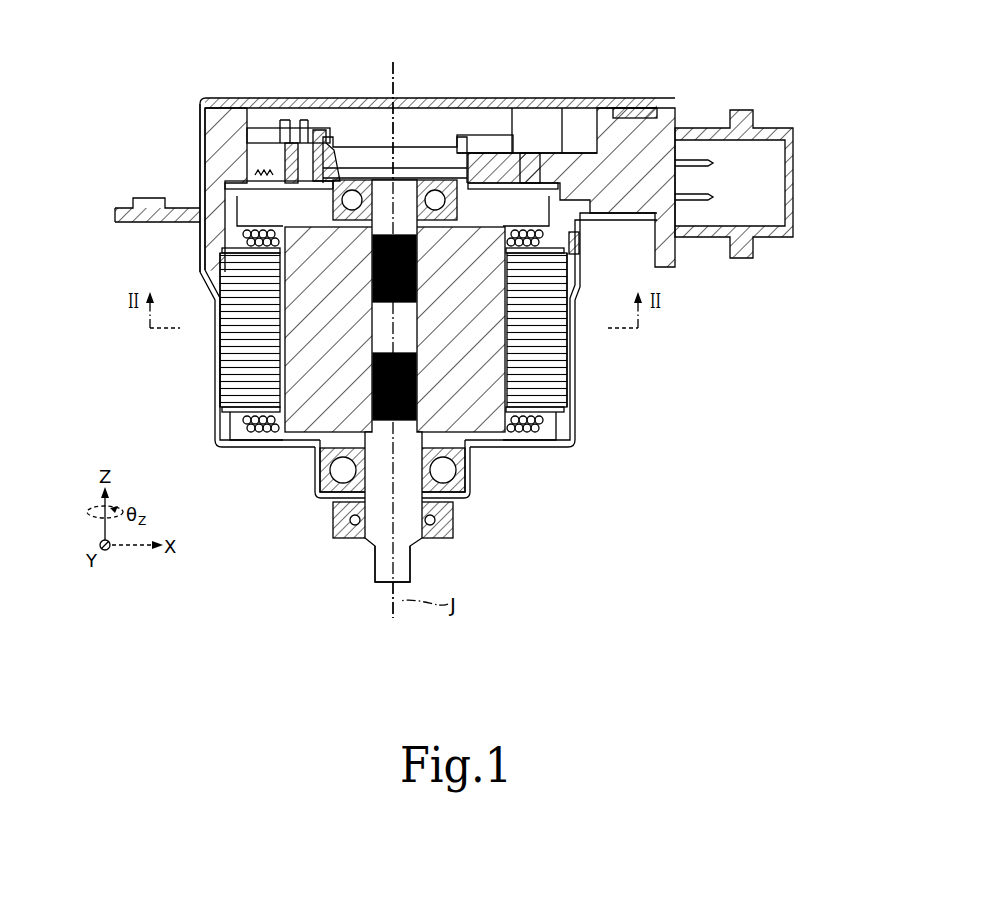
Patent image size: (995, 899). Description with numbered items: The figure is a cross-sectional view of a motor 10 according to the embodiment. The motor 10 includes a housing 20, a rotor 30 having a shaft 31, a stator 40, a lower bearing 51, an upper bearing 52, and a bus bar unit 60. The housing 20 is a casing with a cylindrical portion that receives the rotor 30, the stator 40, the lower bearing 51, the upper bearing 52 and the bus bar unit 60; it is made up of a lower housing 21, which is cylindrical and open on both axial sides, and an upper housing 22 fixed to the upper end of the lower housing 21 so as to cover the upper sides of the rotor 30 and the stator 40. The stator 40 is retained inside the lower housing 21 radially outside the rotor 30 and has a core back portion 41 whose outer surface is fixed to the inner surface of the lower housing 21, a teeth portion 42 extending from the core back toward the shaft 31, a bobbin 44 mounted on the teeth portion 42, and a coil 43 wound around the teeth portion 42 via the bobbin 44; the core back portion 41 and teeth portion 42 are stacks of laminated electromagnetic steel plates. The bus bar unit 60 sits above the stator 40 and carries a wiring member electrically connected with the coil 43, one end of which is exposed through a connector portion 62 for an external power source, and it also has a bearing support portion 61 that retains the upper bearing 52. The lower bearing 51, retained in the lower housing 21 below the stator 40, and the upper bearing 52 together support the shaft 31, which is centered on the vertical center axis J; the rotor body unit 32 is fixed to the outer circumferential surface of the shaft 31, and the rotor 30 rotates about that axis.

The motor 10 is at (774, 84).
The housing 20 is at (196, 149).
The lower housing 21 is at (213, 350).
The upper housing 22 is at (198, 180).
The rotor 30 is at (432, 561).
The shaft 31 is at (412, 482).
The rotor body unit 32 is at (494, 214).
The stator 40 is at (573, 431).
The core back portion 41 is at (222, 405).
The teeth portion 42 is at (226, 443).
The coil 43 is at (545, 411).
The bobbin 44 is at (584, 236).
The lower bearing 51 is at (343, 472).
The upper bearing 52 is at (436, 196).
The bus bar unit 60 is at (668, 95).
The bearing support portion 61 is at (343, 165).
The connector portion 62 is at (768, 238).